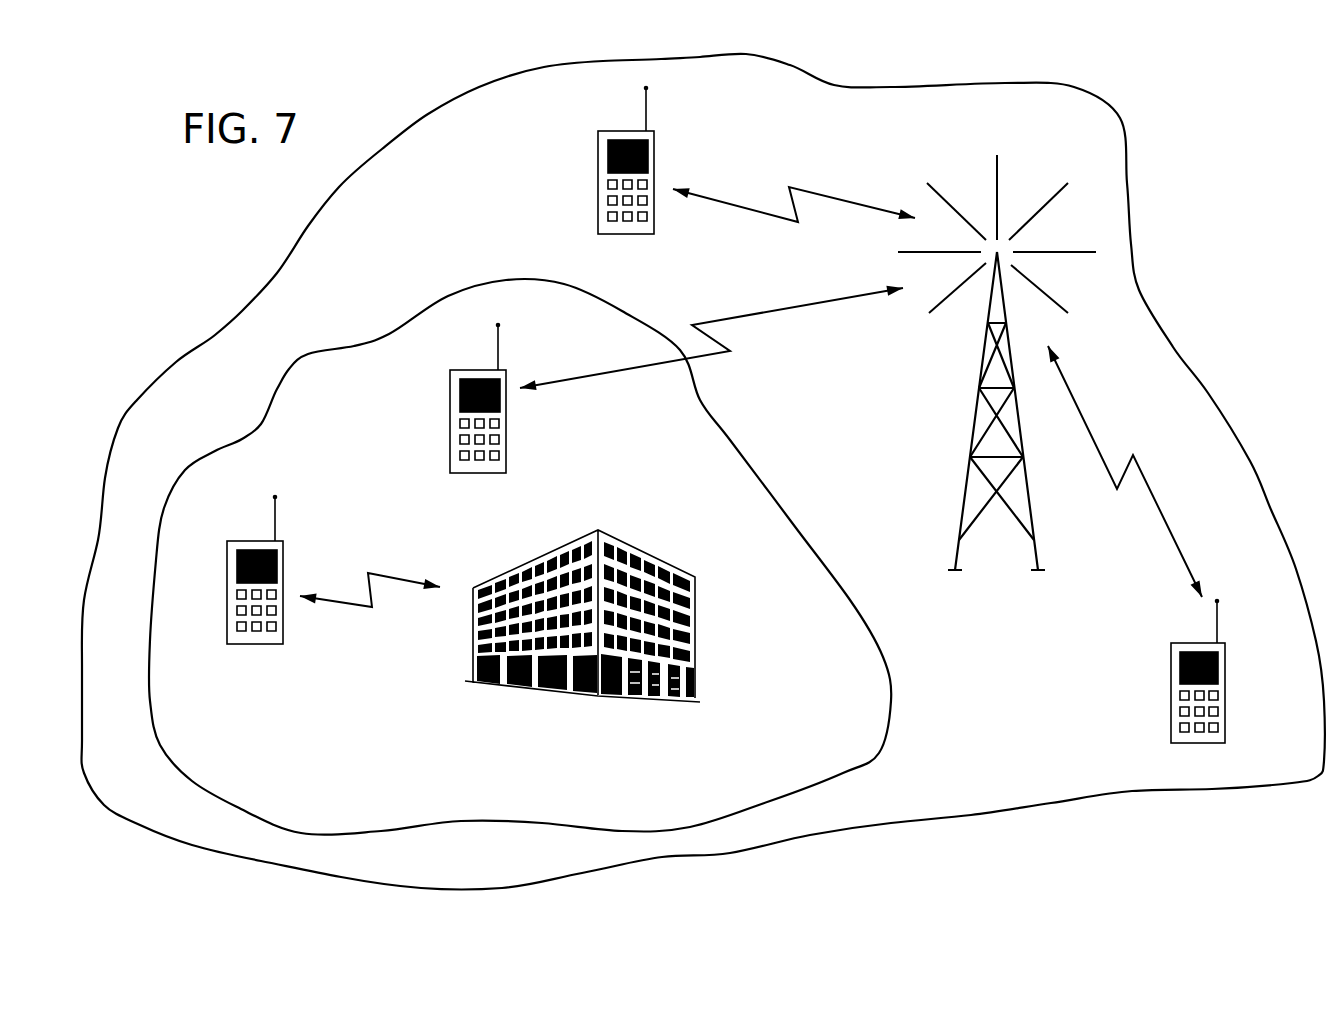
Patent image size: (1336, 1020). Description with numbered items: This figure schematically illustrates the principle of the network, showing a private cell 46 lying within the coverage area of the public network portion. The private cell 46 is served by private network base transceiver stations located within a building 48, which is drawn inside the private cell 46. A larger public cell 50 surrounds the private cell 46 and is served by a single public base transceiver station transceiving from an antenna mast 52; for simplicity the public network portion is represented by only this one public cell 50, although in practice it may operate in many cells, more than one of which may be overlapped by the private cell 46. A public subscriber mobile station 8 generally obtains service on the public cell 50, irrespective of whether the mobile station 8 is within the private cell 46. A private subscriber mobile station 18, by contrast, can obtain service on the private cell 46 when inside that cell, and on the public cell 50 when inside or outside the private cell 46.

The public subscriber mobile station 8 is at (506, 446).
The private subscriber mobile station 18 is at (598, 199).
The private cell 46 is at (399, 342).
The building 48 is at (665, 560).
The public cell 50 is at (244, 325).
The antenna mast 52 is at (975, 412).